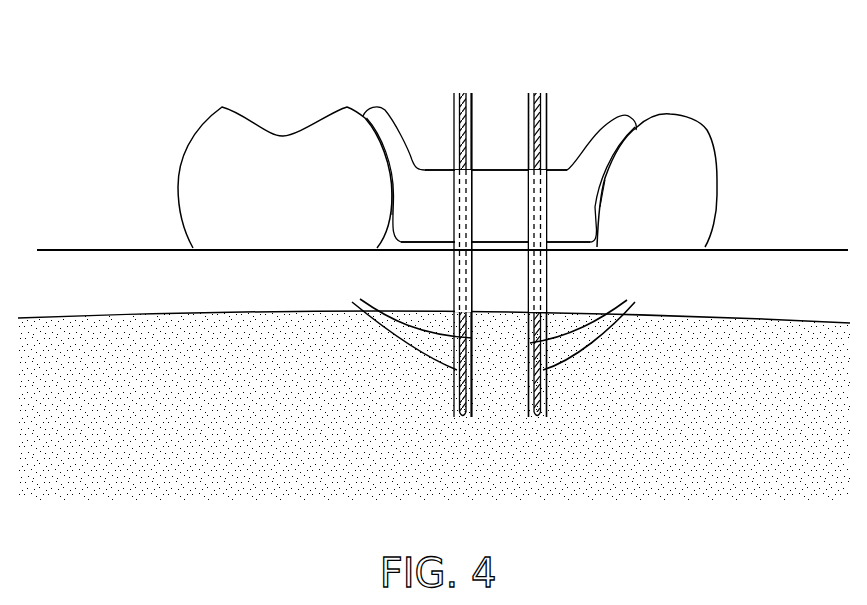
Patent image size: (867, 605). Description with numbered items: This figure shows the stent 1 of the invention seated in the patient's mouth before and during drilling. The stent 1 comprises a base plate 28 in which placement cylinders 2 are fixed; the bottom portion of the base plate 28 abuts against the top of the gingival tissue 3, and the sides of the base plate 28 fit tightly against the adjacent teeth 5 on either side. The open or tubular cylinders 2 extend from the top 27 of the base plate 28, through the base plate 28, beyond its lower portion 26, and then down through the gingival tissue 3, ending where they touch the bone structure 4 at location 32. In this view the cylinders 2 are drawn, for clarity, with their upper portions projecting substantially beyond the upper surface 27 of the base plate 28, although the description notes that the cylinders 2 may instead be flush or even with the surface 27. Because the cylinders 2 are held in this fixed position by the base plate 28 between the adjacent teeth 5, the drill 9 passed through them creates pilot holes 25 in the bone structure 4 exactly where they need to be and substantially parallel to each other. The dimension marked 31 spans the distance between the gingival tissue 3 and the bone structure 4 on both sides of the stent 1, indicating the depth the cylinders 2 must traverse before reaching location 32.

The stent 1 is at (425, 171).
The cylinders 2 is at (455, 113).
The gingival tissue 3 is at (286, 283).
The bone structure 4 is at (218, 327).
The adjacent teeth 5 is at (213, 142).
The drill 9 is at (468, 101).
The pilot holes 25 is at (491, 324).
The lower portion of the base plate 26 is at (480, 248).
The top of base plate 27 is at (491, 169).
The base plate 28 is at (410, 187).
The distance between gingiva and bone 31 is at (73, 250).
The location 32 is at (452, 313).